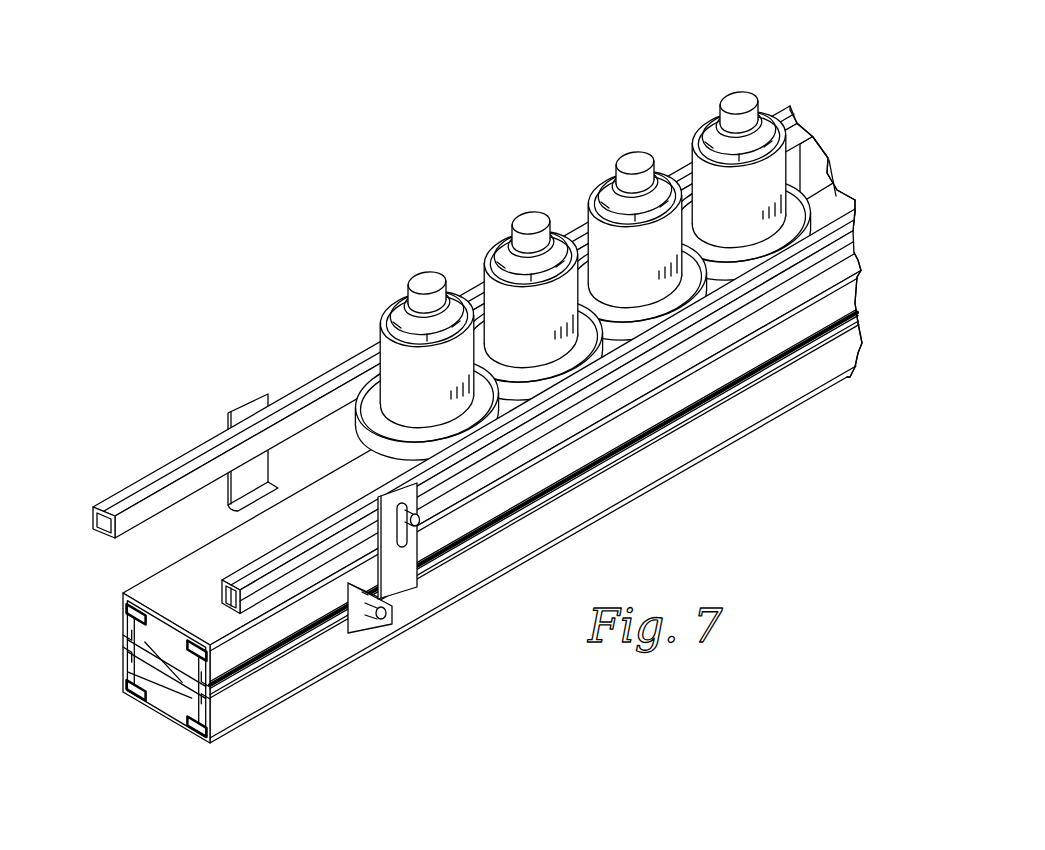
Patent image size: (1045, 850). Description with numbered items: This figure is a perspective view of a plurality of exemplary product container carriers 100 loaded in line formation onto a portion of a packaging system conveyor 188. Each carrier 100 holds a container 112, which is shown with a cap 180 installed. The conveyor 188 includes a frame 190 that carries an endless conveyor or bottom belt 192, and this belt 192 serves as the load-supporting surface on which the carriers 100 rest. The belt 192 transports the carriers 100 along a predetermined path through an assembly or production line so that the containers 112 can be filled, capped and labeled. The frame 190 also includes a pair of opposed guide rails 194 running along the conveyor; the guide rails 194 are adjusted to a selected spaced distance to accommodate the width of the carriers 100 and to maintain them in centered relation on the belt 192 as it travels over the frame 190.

The product container carrier 100 is at (466, 250).
The container 112 is at (712, 118).
The cap 180 is at (523, 223).
The packaging system conveyor 188 is at (109, 462).
The frame 190 is at (307, 668).
The bottom belt 192 is at (160, 592).
The guide rails 194 is at (855, 204).